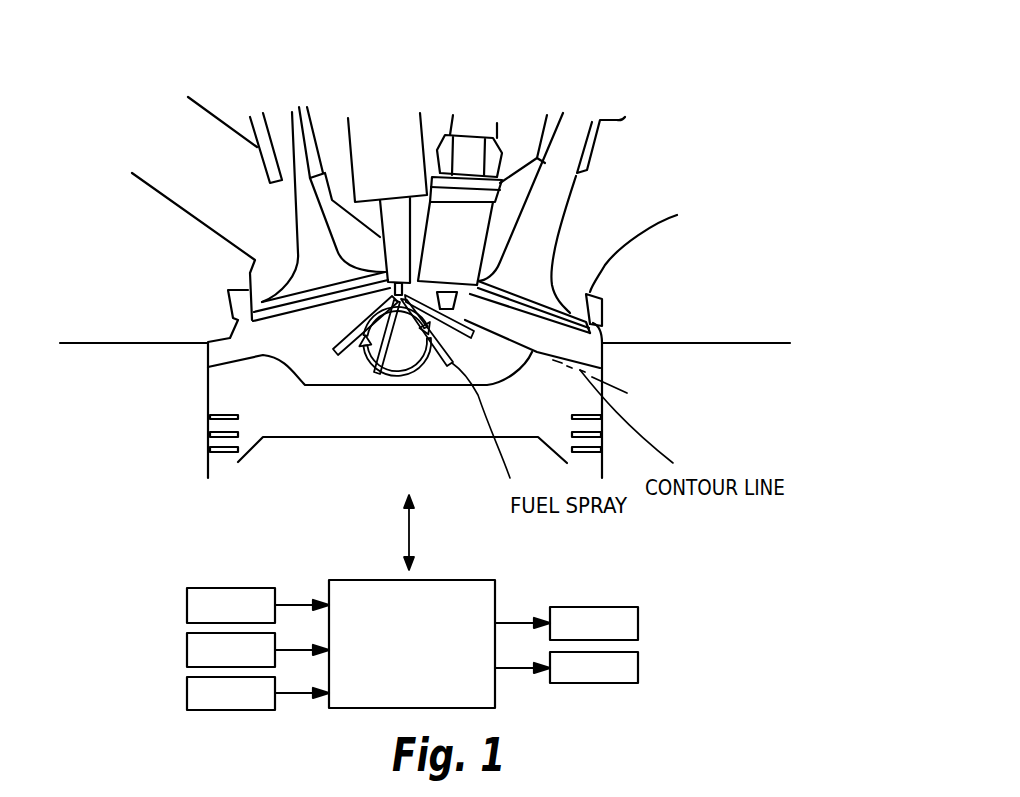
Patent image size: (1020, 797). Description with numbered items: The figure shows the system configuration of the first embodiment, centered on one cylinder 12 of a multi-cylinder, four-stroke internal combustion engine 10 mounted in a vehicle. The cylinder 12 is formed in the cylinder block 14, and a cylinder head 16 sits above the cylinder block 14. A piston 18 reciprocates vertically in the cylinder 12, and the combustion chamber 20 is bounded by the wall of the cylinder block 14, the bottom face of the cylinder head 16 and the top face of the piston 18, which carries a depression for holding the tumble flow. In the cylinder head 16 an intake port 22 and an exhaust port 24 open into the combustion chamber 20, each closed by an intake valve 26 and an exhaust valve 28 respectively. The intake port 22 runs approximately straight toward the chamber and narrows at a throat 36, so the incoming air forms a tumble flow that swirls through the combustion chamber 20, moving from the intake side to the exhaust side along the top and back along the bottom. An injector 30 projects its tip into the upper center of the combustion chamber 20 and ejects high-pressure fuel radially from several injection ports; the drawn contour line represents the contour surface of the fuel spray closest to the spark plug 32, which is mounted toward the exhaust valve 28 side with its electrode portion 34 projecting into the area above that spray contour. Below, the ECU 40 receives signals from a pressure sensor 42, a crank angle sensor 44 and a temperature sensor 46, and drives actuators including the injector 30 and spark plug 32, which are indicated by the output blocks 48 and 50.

The internal combustion engine 10 is at (727, 173).
The cylinder 12 is at (186, 393).
The cylinder block 14 is at (736, 399).
The cylinder head 16 is at (736, 322).
The piston 18 is at (453, 403).
The combustion chamber 20 is at (305, 353).
The intake port 22 is at (247, 187).
The exhaust port 24 is at (632, 217).
The intake valve 26 is at (287, 123).
The exhaust valve 28 is at (575, 126).
The injector 30 is at (383, 118).
The spark plug 32 is at (477, 115).
The electrode portion 34 is at (480, 290).
The throat 36 is at (265, 278).
The ECU 40 is at (358, 582).
The pressure sensor 42 is at (187, 602).
The crank angle sensor 44 is at (187, 647).
The temperature sensor 46 is at (187, 691).
The actuator 48 is at (640, 620).
The actuator 50 is at (640, 665).